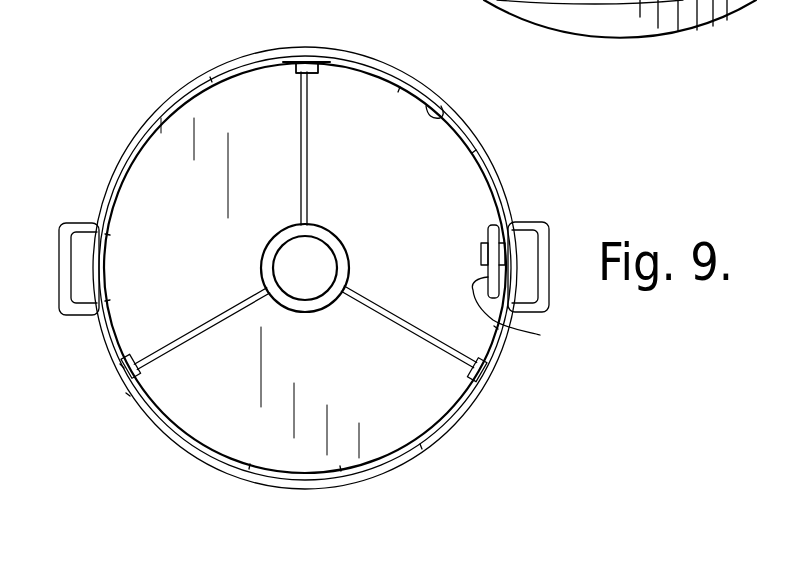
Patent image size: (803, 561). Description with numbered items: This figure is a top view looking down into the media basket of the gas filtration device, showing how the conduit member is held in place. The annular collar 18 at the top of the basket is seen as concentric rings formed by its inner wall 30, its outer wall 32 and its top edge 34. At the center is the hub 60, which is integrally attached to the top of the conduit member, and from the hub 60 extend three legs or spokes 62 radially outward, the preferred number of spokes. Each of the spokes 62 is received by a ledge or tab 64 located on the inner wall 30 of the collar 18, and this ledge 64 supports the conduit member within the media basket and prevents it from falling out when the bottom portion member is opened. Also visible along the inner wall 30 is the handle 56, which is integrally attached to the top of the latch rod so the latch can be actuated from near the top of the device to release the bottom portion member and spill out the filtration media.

The collar 18 is at (490, 160).
The inner wall 30 is at (426, 106).
The outer wall 32 is at (507, 200).
The top edge 34 is at (230, 70).
The handle 56 is at (540, 335).
The hub 60 is at (317, 298).
The spokes 62 is at (305, 133).
The ledge 64 is at (282, 62).